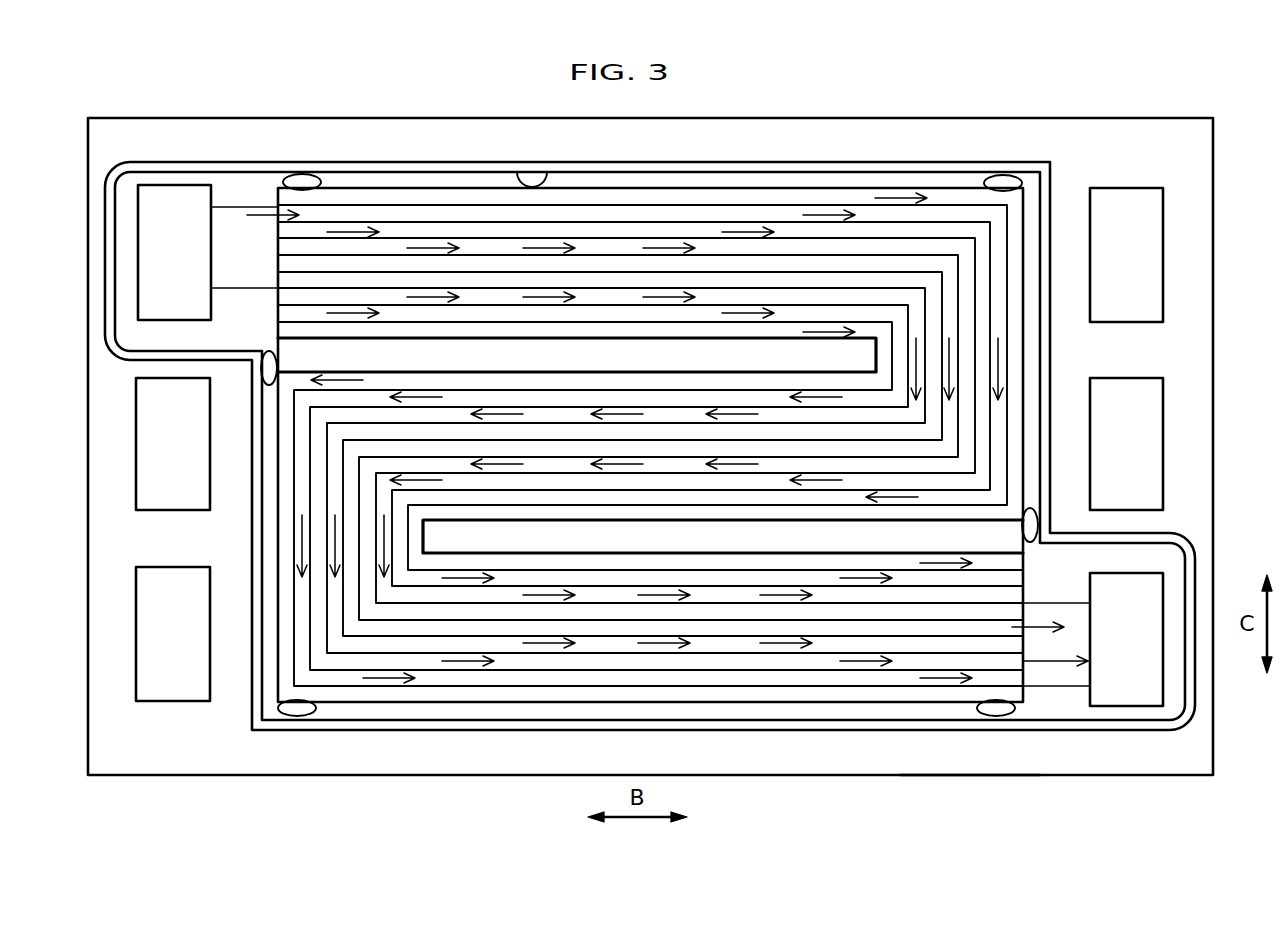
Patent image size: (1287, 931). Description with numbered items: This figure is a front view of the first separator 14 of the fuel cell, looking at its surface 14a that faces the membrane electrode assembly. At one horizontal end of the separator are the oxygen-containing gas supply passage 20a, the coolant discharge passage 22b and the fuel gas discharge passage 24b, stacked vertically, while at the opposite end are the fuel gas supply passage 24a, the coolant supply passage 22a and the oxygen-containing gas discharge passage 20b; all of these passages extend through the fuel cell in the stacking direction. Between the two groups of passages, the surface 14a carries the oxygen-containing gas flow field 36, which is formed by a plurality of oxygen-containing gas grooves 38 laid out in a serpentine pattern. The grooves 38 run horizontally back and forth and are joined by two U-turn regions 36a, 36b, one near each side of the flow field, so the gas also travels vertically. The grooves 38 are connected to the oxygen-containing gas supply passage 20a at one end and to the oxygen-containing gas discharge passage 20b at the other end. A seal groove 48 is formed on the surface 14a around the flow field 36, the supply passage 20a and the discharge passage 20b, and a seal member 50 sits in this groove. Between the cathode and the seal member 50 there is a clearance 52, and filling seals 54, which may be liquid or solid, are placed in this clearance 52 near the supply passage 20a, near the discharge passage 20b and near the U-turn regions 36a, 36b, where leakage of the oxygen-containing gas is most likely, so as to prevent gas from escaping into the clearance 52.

The first separator 14 is at (913, 95).
The surface of the first separator 14a is at (965, 757).
The oxygen-containing gas supply passage 20a is at (174, 252).
The oxygen-containing gas discharge passage 20b is at (1126, 639).
The coolant supply passage 22a is at (1126, 444).
The coolant discharge passage 22b is at (173, 444).
The fuel gas supply passage 24a is at (1126, 255).
The fuel gas discharge passage 24b is at (173, 634).
The oxygen-containing gas flow field 36 is at (617, 217).
The U-turn region 36a is at (985, 350).
The U-turn region 36b is at (313, 543).
The oxygen-containing gas grooves 38 is at (480, 232).
The seal groove 48 is at (535, 172).
The seal member 50 is at (975, 150).
The clearance 52 is at (1027, 318).
The filling seals 54 is at (302, 176).